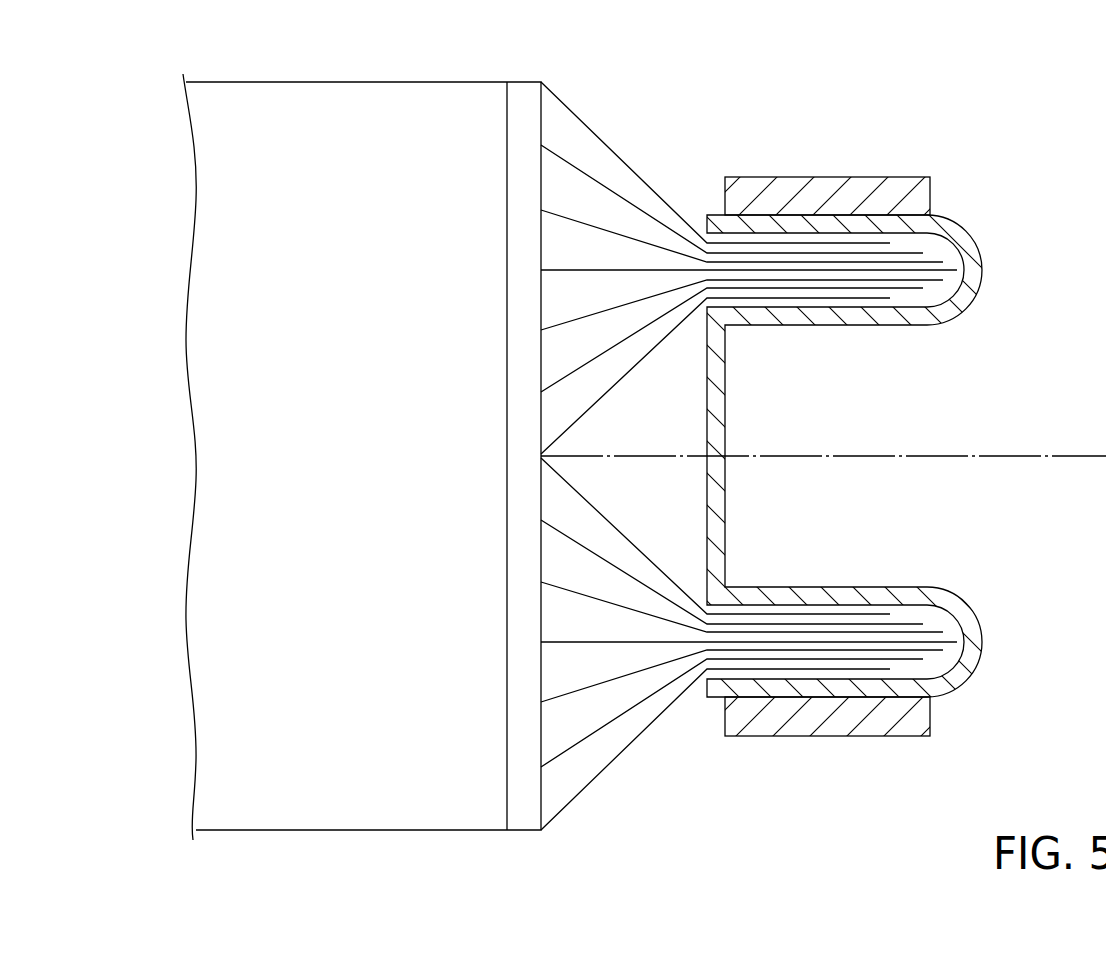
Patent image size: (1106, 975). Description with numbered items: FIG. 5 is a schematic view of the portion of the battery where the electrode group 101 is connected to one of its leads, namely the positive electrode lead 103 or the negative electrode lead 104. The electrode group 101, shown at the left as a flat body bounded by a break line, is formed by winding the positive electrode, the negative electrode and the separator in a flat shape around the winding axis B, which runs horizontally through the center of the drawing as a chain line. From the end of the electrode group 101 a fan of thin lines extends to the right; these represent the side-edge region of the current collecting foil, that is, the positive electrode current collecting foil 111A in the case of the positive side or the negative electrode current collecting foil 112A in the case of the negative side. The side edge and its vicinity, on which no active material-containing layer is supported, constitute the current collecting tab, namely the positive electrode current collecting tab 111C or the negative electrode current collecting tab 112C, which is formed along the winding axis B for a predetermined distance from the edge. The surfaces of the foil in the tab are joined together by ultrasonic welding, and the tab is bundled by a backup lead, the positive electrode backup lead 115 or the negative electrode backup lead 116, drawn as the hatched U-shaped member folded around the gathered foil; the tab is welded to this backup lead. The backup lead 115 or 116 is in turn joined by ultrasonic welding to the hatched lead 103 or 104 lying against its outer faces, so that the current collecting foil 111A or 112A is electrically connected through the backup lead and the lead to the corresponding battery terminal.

The electrode group 101 is at (388, 100).
The negative electrode current collecting foil 112A is at (715, 467).
The positive electrode current collecting foil 111A is at (652, 102).
The negative electrode current collecting tab 112C is at (749, 463).
The positive electrode current collecting tab 111C is at (722, 148).
The negative electrode lead 104 is at (613, 462).
The positive electrode lead 103 is at (835, 193).
The negative electrode backup lead 116 is at (633, 455).
The positive electrode backup lead 115 is at (713, 505).
The winding axis B is at (1053, 457).